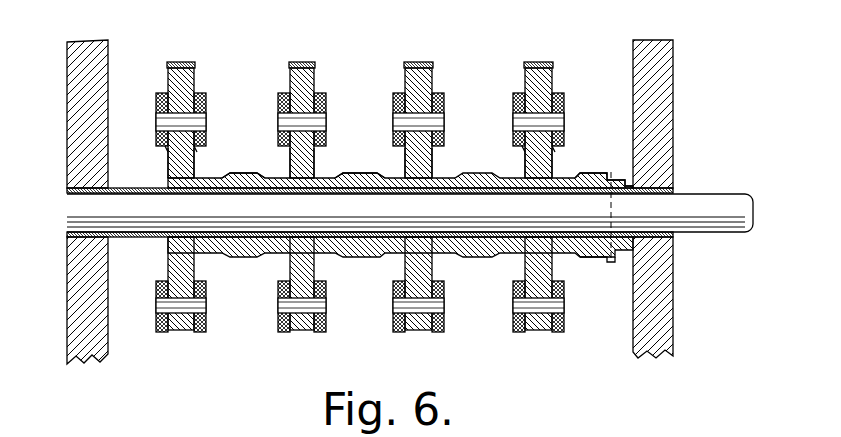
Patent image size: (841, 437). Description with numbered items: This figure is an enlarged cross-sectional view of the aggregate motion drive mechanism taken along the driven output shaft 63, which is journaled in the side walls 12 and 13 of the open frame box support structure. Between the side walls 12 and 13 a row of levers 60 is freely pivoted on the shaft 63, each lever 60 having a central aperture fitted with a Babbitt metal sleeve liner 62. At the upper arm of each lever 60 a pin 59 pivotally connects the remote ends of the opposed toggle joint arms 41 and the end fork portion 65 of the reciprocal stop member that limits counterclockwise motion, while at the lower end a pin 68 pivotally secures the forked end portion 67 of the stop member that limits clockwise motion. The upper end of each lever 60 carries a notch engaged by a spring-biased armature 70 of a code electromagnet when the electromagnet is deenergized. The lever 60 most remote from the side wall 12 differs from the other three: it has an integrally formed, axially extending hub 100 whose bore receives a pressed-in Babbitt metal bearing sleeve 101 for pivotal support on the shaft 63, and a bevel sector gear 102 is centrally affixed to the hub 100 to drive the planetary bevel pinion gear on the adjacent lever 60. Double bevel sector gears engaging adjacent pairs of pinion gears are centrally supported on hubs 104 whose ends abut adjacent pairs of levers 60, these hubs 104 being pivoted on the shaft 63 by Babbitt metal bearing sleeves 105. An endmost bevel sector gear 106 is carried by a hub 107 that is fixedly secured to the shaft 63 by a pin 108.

The side wall 12 is at (662, 297).
The side wall 13 is at (97, 357).
The toggle joint arms 41 is at (157, 95).
The pin 59 is at (278, 121).
The lever 60 is at (290, 77).
The Babbitt metal sleeve liner 62 is at (525, 173).
The driven output shaft 63 is at (713, 230).
The end fork portion 65 is at (194, 148).
The forked end portion 67 is at (318, 333).
The pin 68 is at (280, 305).
The armature 70 is at (181, 62).
The hub 100 is at (268, 176).
The Babbitt metal bearing sleeve 101 is at (180, 182).
The bevel sector gear 102 is at (232, 256).
The hubs 104 is at (384, 176).
The Babbitt metal bearing sleeves 105 is at (352, 194).
The endmost bevel sector gear 106 is at (590, 258).
The hub 107 is at (568, 177).
The pin 108 is at (612, 177).